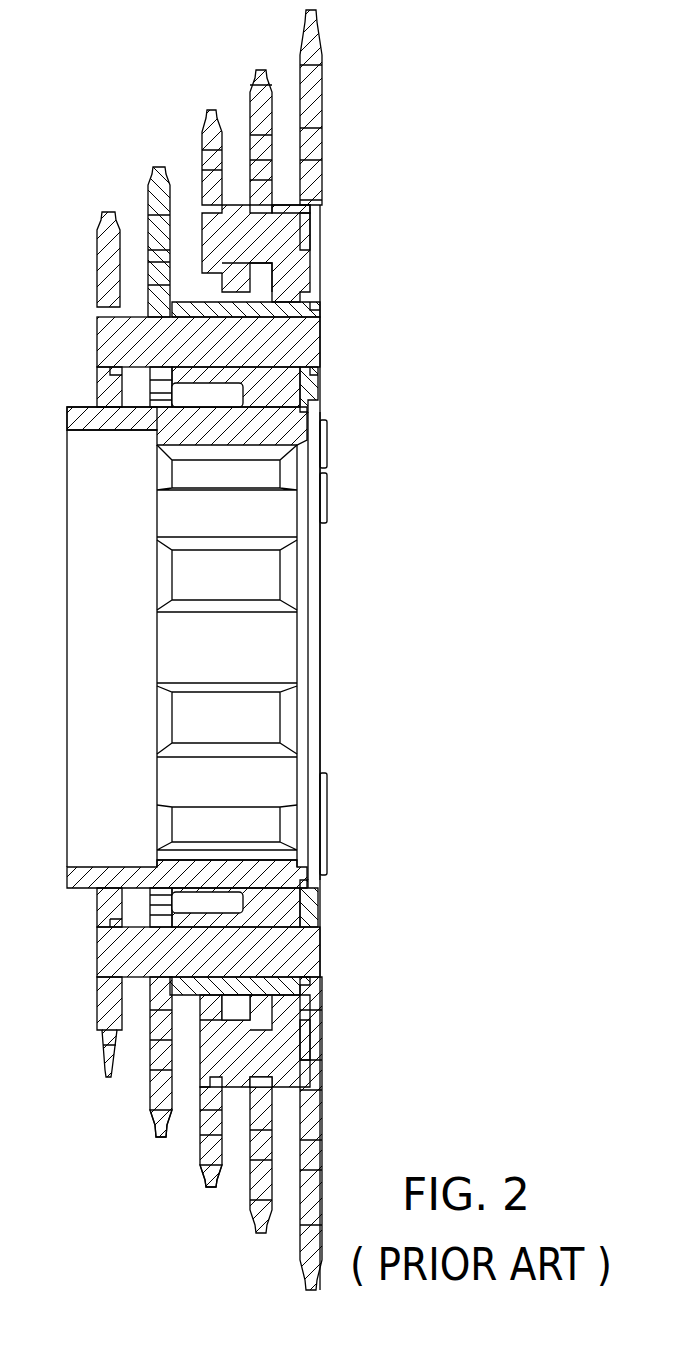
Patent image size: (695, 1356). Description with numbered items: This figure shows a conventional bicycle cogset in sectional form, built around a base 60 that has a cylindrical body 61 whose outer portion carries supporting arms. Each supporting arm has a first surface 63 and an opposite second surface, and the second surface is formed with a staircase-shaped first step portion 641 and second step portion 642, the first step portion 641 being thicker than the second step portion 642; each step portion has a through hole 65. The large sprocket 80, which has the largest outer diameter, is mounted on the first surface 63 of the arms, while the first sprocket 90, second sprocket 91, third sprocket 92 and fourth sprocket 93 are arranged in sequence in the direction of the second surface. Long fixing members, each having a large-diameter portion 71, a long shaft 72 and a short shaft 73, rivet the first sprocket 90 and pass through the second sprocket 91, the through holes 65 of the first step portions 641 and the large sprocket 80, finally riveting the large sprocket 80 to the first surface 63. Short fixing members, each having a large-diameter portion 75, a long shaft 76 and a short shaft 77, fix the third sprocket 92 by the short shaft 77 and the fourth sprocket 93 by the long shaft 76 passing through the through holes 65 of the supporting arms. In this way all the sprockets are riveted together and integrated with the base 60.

The base 60 is at (277, 420).
The cylindrical body 61 is at (83, 418).
The first surface 63 is at (303, 390).
The first step portion 641 is at (152, 225).
The second step portion 642 is at (290, 200).
The through hole 65 is at (310, 230).
The large-diameter portion 71 is at (140, 312).
The long shaft 72 is at (310, 340).
The short shaft 73 is at (108, 348).
The large-diameter portion 75 is at (237, 200).
The long shaft 76 is at (300, 255).
The short shaft 77 is at (198, 205).
The large sprocket 80 is at (312, 97).
The first sprocket 90 is at (98, 1020).
The second sprocket 91 is at (155, 1117).
The third sprocket 92 is at (205, 1065).
The fourth sprocket 93 is at (285, 1100).